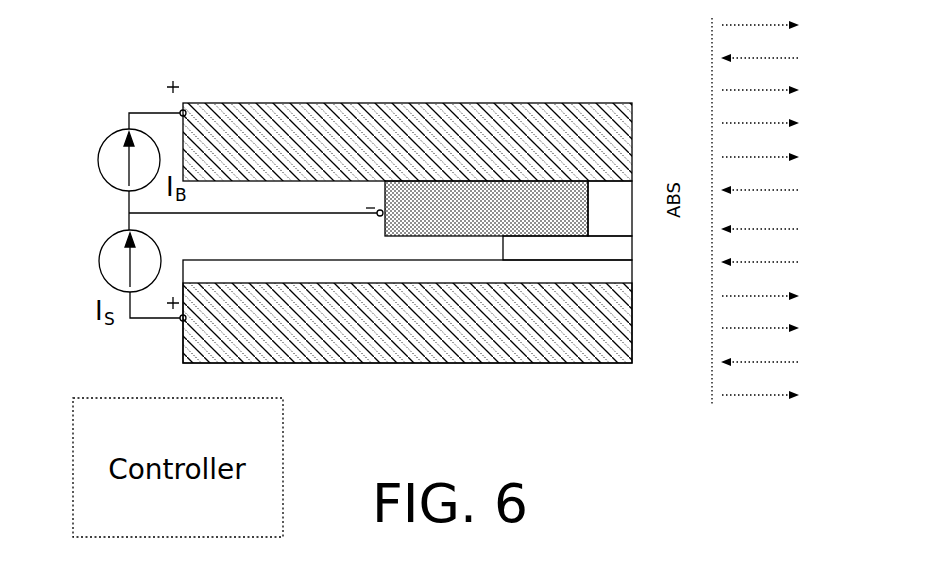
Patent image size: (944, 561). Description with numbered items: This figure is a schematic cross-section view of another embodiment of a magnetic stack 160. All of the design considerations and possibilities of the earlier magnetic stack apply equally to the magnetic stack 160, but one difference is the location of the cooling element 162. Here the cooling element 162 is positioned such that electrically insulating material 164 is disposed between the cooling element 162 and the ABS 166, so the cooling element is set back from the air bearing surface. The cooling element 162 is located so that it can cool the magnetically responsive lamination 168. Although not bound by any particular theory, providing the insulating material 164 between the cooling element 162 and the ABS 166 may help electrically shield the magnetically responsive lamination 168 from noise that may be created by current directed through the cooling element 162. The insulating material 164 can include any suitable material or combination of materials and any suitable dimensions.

The magnetic stack 160 is at (436, 229).
The cooling element 162 is at (477, 224).
The electrically insulating material 164 is at (633, 204).
The ABS 166 is at (684, 350).
The magnetically responsive lamination 168 is at (574, 258).